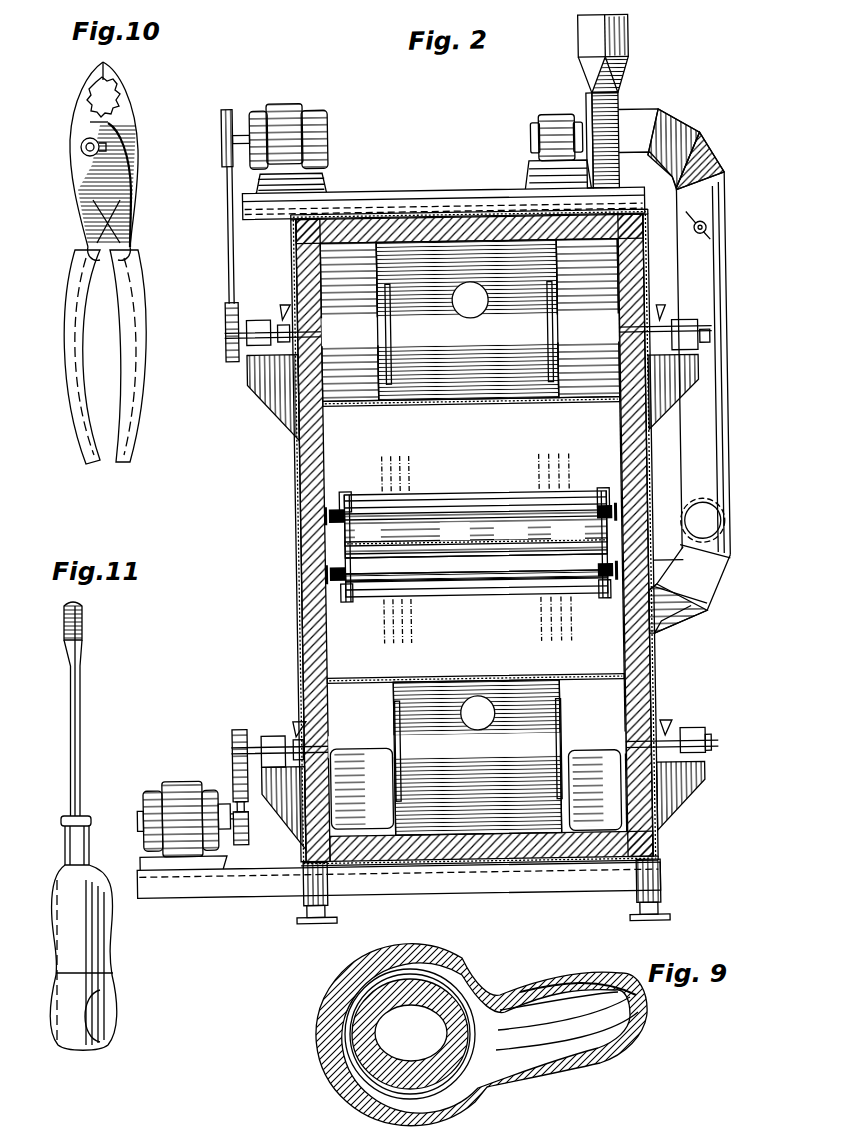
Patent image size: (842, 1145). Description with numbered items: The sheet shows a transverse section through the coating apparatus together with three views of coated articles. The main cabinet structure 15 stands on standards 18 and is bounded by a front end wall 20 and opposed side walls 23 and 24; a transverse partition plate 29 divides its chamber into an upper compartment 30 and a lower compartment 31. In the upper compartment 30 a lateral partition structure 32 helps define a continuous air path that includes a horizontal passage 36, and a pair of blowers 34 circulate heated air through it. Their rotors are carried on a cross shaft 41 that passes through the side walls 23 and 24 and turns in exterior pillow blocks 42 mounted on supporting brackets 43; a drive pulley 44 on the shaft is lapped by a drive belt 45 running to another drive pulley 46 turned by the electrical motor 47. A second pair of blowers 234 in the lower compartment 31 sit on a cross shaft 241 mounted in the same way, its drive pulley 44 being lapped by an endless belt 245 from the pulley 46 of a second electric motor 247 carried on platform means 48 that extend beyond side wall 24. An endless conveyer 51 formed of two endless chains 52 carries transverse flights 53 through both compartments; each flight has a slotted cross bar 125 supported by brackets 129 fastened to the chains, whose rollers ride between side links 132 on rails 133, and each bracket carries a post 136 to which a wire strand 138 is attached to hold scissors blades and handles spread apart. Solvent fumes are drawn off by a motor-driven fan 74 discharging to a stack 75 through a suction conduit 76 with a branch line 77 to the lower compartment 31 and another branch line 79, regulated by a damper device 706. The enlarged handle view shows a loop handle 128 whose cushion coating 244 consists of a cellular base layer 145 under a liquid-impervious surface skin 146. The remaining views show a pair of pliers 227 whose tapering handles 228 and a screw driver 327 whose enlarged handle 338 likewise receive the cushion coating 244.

In FIG. 2, the main cabinet structure 15 is at (662, 680).
In FIG. 2, the standards 18 is at (323, 895).
In FIG. 2, the front end wall 20 is at (330, 441).
In FIG. 2, the side wall 23 is at (659, 455).
In FIG. 2, the side wall 24 is at (297, 492).
In FIG. 2, the transverse partition plate 29 is at (426, 544).
In FIG. 2, the upper compartment 30 is at (470, 320).
In FIG. 2, the lower compartment 31 is at (476, 758).
In FIG. 2, the lateral partition structure 32 is at (472, 406).
In FIG. 2, the blowers 34 is at (394, 282).
In FIG. 2, the horizontal passage 36 is at (528, 448).
In FIG. 2, the cross shaft 41 is at (714, 338).
In FIG. 2, the pillow blocks 42 is at (262, 317).
In FIG. 2, the supporting brackets 43 is at (268, 400).
In FIG. 2, the drive pulley 44 is at (229, 352).
In FIG. 2, the drive belt 45 is at (233, 245).
In FIG. 2, the drive pulley 46 is at (229, 157).
In FIG. 2, the electrical motor 47 is at (336, 118).
In FIG. 2, the platform means 48 is at (160, 896).
In FIG. 2, the endless conveyer 51 is at (472, 579).
In FIG. 2, the endless chains 52 is at (346, 520).
In FIG. 2, the flights 53 is at (500, 493).
In FIG. 2, the motor-driven fan 74 is at (627, 104).
In FIG. 2, the stack 75 is at (636, 44).
In FIG. 2, the suction conduit 76 is at (726, 164).
In FIG. 2, the branch line 77 is at (713, 606).
In FIG. 2, the branch line 79 is at (692, 512).
In FIG. 2, the cross bar 125 is at (604, 490).
In FIG. 9, the loop handles 128 is at (433, 982).
In FIG. 2, the brackets 129 is at (347, 492).
In FIG. 2, the side links 132 is at (500, 677).
In FIG. 2, the rail 133 is at (330, 516).
In FIG. 2, the post 136 is at (487, 665).
In FIG. 2, the wire strand 138 is at (508, 506).
In FIG. 9, the cellular base layer 145 is at (330, 1000).
In FIG. 9, the surface skin 146 is at (338, 975).
In FIG. 10, the pliers 227 is at (127, 148).
In FIG. 10, the handles 228 is at (124, 222).
In FIG. 2, the blowers 234 is at (396, 790).
In FIG. 2, the cross shaft 241 is at (709, 747).
In FIG. 10, the cushion coating 244 is at (142, 306).
In FIG. 11, the cushion coating 244 is at (106, 1007).
In FIG. 9, the cushion coating 244 is at (526, 983).
In FIG. 2, the endless belt 245 is at (230, 778).
In FIG. 2, the second electric motor 247 is at (212, 864).
In FIG. 11, the screw driver 327 is at (84, 810).
In FIG. 11, the handle 338 is at (100, 1030).
In FIG. 2, the damper device 706 is at (715, 232).